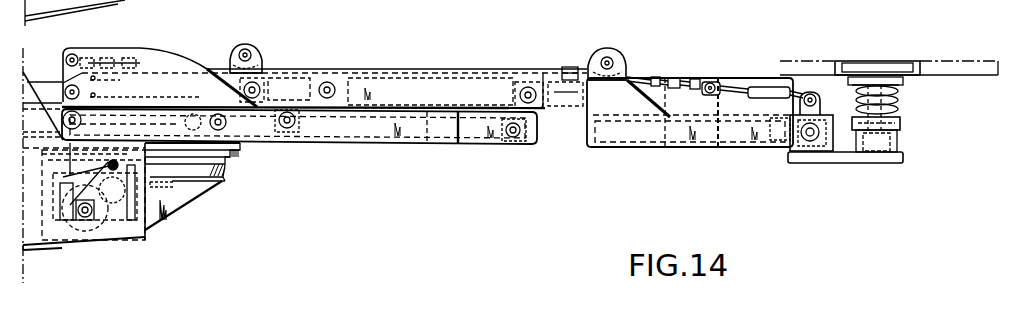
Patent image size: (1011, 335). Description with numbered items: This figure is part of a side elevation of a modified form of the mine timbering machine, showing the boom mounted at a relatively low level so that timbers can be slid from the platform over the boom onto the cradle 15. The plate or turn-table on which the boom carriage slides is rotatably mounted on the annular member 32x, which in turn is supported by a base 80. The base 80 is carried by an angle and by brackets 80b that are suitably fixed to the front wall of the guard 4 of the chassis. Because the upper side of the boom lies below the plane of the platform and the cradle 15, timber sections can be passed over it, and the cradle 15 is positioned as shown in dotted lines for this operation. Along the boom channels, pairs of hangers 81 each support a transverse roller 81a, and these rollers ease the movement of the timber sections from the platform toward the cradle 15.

The frame 4 is at (163, 8).
The cradle 15 is at (932, 111).
The annular member 32x is at (226, 170).
The base 80 is at (249, 211).
The brackets 80b is at (174, 209).
The hangers 81 is at (266, 61).
The transverse roller 81a is at (247, 45).